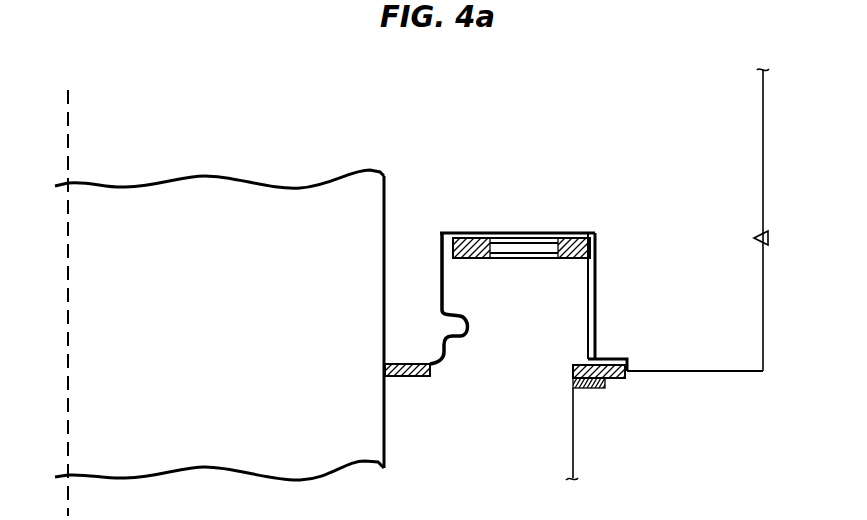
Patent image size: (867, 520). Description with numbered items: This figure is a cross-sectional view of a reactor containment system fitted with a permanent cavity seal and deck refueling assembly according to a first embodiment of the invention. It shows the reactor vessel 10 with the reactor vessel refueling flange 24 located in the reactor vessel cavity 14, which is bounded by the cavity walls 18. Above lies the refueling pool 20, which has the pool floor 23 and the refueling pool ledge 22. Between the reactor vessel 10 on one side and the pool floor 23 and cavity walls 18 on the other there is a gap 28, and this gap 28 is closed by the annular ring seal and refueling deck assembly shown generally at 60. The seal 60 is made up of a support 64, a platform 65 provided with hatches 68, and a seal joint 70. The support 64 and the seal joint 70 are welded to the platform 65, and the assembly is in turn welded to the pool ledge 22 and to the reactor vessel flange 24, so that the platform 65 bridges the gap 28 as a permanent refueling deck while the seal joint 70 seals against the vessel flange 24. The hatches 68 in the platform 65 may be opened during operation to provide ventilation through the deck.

The reactor vessel 10 is at (202, 316).
The reactor vessel cavity 14 is at (442, 474).
The cavity walls 18 is at (763, 142).
The refueling pool 20 is at (480, 121).
The refueling pool ledge 22 is at (610, 389).
The pool floor 23 is at (636, 368).
The reactor vessel refueling flange 24 is at (398, 380).
The gap 28 is at (535, 369).
The annular ring seal and refueling deck assembly 60 is at (473, 214).
The support 64 is at (597, 290).
The platform 65 is at (575, 234).
The hatches 68 is at (522, 268).
The seal joint 70 is at (460, 343).